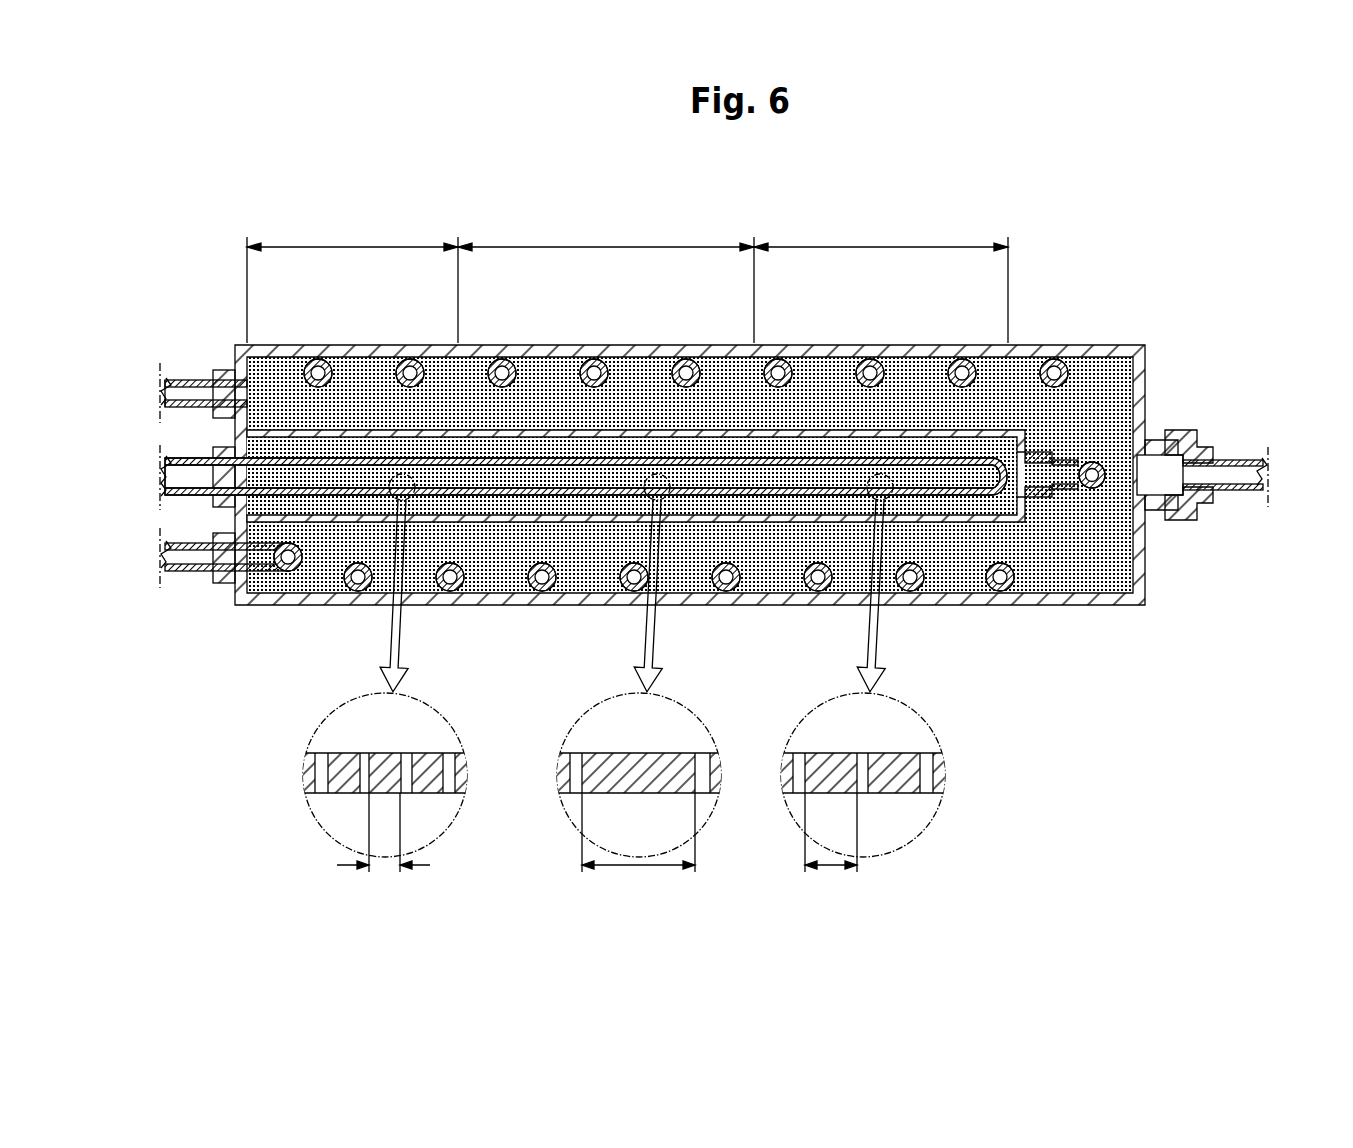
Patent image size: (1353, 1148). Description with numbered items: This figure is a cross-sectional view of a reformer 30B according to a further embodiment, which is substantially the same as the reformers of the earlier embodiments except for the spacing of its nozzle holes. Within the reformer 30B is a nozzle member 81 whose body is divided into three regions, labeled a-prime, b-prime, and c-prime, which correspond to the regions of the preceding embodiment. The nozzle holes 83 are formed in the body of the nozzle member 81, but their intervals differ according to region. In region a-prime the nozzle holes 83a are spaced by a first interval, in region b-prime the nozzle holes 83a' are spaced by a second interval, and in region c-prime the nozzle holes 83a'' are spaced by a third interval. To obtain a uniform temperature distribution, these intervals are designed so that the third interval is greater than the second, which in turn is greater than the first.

The reformer 30B is at (752, 184).
The nozzle member 81 is at (352, 495).
The nozzle holes 83 is at (852, 895).
The nozzle holes 83a is at (373, 788).
The nozzle holes 83a' is at (848, 788).
The nozzle holes 83a'' is at (624, 788).